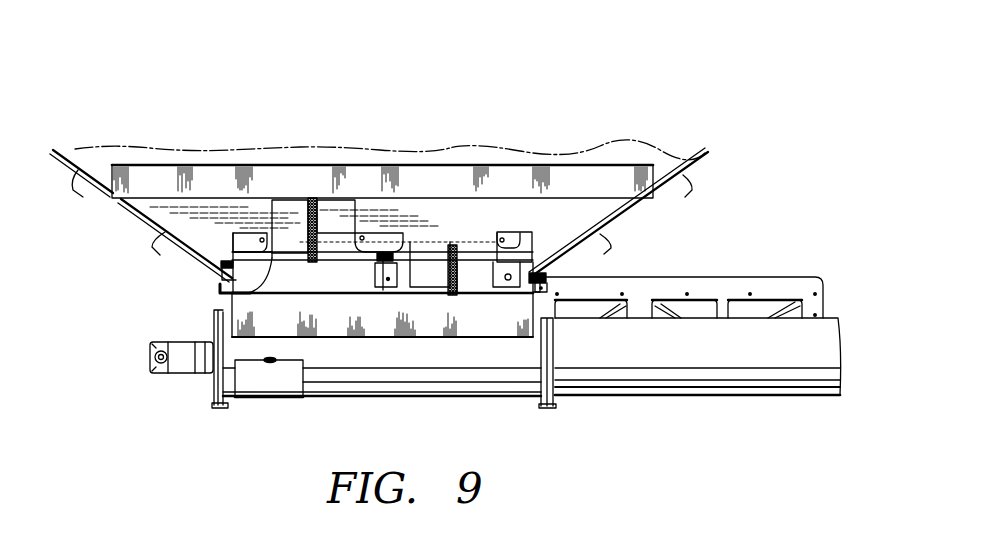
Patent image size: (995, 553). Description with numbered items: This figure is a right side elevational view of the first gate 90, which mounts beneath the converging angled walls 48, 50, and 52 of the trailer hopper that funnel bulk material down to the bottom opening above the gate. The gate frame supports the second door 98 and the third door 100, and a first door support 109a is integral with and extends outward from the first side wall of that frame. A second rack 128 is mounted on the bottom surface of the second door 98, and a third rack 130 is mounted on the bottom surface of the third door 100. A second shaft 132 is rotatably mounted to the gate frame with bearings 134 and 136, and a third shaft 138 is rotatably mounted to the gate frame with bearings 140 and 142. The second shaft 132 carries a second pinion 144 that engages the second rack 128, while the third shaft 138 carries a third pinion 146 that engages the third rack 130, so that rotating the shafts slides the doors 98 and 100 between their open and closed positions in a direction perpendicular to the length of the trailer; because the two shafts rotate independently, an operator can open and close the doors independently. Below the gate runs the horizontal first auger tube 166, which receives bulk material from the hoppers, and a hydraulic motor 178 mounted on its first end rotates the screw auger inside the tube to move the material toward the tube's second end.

The first gate 90 is at (475, 90).
The angled wall 48 is at (66, 160).
The angled wall 50 is at (616, 151).
The angled wall 52 is at (704, 158).
The second door 98 is at (291, 212).
The second rack 128 is at (318, 198).
The third rack 130 is at (483, 252).
The second shaft 132 is at (221, 289).
The bearing 134 is at (228, 275).
The bearing 136 is at (375, 263).
The third shaft 138 is at (480, 258).
The bearing 140 is at (402, 263).
The bearing 142 is at (542, 278).
The second pinion 144 is at (303, 263).
The third pinion 146 is at (444, 258).
The third door 100 is at (480, 273).
The first door support 109a is at (783, 283).
The first auger tube 166 is at (329, 396).
The hydraulic motor 178 is at (150, 358).